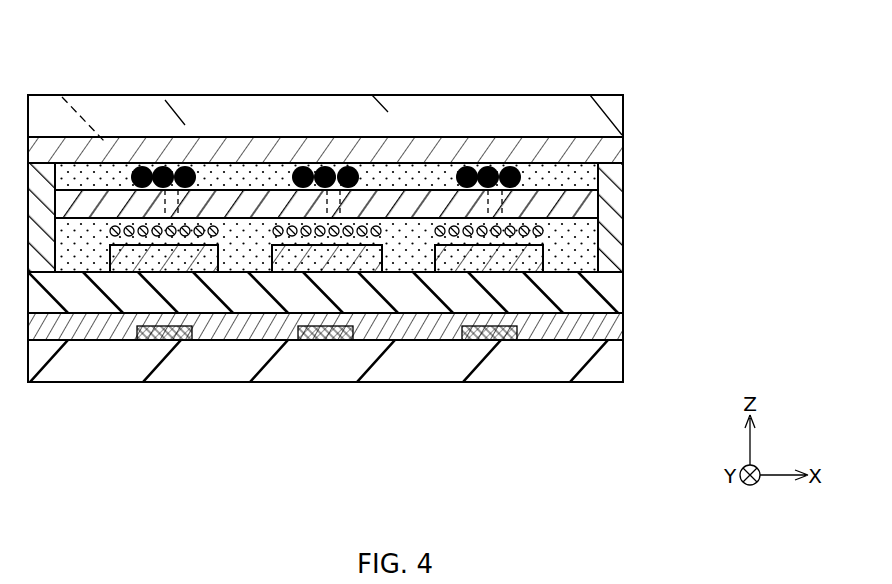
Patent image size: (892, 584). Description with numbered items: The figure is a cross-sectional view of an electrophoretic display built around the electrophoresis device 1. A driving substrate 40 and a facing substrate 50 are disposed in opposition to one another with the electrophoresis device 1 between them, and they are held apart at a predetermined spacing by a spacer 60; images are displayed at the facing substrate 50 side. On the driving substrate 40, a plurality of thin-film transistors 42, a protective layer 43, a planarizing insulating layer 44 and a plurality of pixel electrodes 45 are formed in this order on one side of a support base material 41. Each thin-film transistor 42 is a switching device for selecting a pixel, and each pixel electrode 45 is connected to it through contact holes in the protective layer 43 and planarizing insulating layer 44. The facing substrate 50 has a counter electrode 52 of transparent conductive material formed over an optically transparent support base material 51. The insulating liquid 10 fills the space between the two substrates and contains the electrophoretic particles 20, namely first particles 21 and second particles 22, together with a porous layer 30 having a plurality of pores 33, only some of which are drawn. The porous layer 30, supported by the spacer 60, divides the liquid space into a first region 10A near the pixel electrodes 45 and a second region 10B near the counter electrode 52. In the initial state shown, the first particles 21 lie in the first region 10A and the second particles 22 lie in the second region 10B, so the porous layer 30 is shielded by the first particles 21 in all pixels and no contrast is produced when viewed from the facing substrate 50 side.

The electrophoresis device 1 is at (417, 250).
The insulating liquid 10 is at (380, 157).
The first region 10A is at (592, 183).
The second region 10B is at (592, 237).
The electrophoretic particles 20 is at (326, 118).
The first particles 21 is at (303, 166).
The second particles 22 is at (351, 217).
The porous layer 30 is at (432, 207).
The pores 33 is at (515, 211).
The driving substrate 40 is at (587, 405).
The support base material 41 is at (87, 372).
The thin-film transistors 42 is at (155, 337).
The protective layer 43 is at (213, 322).
The planarizing insulating layer 44 is at (288, 297).
The pixel electrodes 45 is at (481, 258).
The facing substrate 50 is at (585, 68).
The support base material 51 is at (80, 100).
The counter electrode 52 is at (163, 150).
The spacer 60 is at (613, 258).